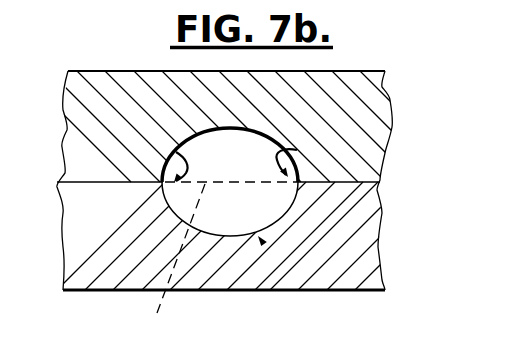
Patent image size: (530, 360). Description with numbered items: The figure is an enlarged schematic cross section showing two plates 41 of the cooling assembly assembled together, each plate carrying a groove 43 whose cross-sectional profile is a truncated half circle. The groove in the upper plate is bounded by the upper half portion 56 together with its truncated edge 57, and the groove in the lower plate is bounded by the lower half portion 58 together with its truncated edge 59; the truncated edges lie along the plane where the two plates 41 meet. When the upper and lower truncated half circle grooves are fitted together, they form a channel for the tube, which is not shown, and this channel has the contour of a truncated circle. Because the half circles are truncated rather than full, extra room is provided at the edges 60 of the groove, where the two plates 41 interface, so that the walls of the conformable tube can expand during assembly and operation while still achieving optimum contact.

The plate 41 is at (118, 70).
The groove 43 is at (264, 244).
The upper half portion 56 is at (190, 132).
The truncated edge 57 is at (173, 263).
The lower half portion 58 is at (273, 220).
The truncated edge 59 is at (173, 263).
The edges of the groove 60 is at (176, 152).